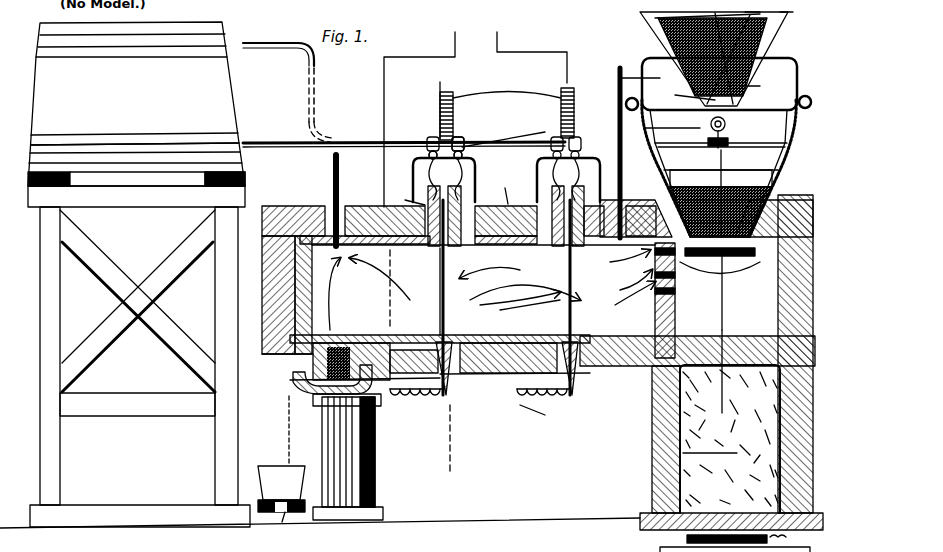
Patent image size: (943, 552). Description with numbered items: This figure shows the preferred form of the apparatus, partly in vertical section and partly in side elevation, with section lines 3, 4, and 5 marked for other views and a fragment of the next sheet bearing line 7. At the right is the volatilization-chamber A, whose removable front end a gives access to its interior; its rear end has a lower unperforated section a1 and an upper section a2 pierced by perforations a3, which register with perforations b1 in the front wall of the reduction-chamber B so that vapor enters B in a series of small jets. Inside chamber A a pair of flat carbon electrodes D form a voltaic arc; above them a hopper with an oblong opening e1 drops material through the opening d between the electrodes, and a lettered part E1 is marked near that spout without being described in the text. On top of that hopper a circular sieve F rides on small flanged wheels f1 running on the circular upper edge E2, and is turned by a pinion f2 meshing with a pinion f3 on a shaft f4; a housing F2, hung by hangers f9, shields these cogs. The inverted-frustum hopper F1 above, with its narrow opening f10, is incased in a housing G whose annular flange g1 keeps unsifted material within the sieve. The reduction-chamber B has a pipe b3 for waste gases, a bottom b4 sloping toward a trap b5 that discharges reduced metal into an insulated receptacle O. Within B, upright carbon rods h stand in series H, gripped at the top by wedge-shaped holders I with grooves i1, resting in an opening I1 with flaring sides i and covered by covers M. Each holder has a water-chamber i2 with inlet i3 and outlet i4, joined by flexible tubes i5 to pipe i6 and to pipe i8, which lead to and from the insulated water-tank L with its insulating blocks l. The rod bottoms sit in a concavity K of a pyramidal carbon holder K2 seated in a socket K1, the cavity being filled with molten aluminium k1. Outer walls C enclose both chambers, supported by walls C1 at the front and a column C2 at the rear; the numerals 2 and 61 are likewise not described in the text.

The water-tank L is at (320, 275).
The table top layer l is at (48, 172).
The table rim block 2 is at (247, 176).
The pipe i8 is at (258, 46).
The section line 5 5 is at (475, 263).
The covers M is at (507, 109).
The holders I is at (449, 266).
The opening I1 is at (471, 289).
The flexible tubes i5 is at (432, 150).
The outlet i4 is at (458, 135).
The pipe i6 is at (462, 148).
The inlet i3 is at (408, 168).
The grooves i1 is at (408, 200).
The outer walls C is at (652, 184).
The outwardly-flaring sides i is at (540, 240).
The reduction-chamber B is at (538, 293).
The pipe b3 is at (342, 180).
The water-chamber i2 is at (369, 290).
The bottom b4 is at (412, 340).
The trap b5 is at (330, 350).
The carbon rods h is at (555, 274).
The series of carbon rods H is at (535, 311).
The molten aluminium k1 is at (520, 307).
The perforations b1 is at (640, 315).
The opening 6' 61 is at (632, 293).
The perforations a3 is at (682, 300).
The volatilization-chamber A is at (720, 271).
The lower unperforated section a1 is at (706, 290).
The front end a is at (792, 310).
The walls C1 is at (797, 447).
The section line 4 4 is at (715, 220).
The concavity K is at (470, 400).
The socket K1 is at (556, 418).
The holder K2 is at (445, 398).
The column C2 is at (376, 446).
The receptacle O is at (272, 462).
The opening d is at (290, 523).
The circular sieve F is at (716, 59).
The hangers f9 is at (794, 14).
The opening f10 is at (749, 14).
The hopper F1 is at (655, 18).
The housing G is at (660, 62).
The housing F2 is at (626, 71).
The section line 3 3 is at (707, 153).
The flanged wheels f1 is at (649, 139).
The pinion f3 is at (685, 95).
The pinion f2 is at (754, 85).
The annular flange g1 is at (715, 132).
The circular upper edge E2 is at (786, 150).
The electrodes D is at (718, 173).
The shaft f4 is at (721, 168).
The oblong opening e1 is at (720, 200).
The layer E' E1 is at (750, 191).
The upper section a2 is at (706, 205).
The section line 7 7 is at (687, 540).